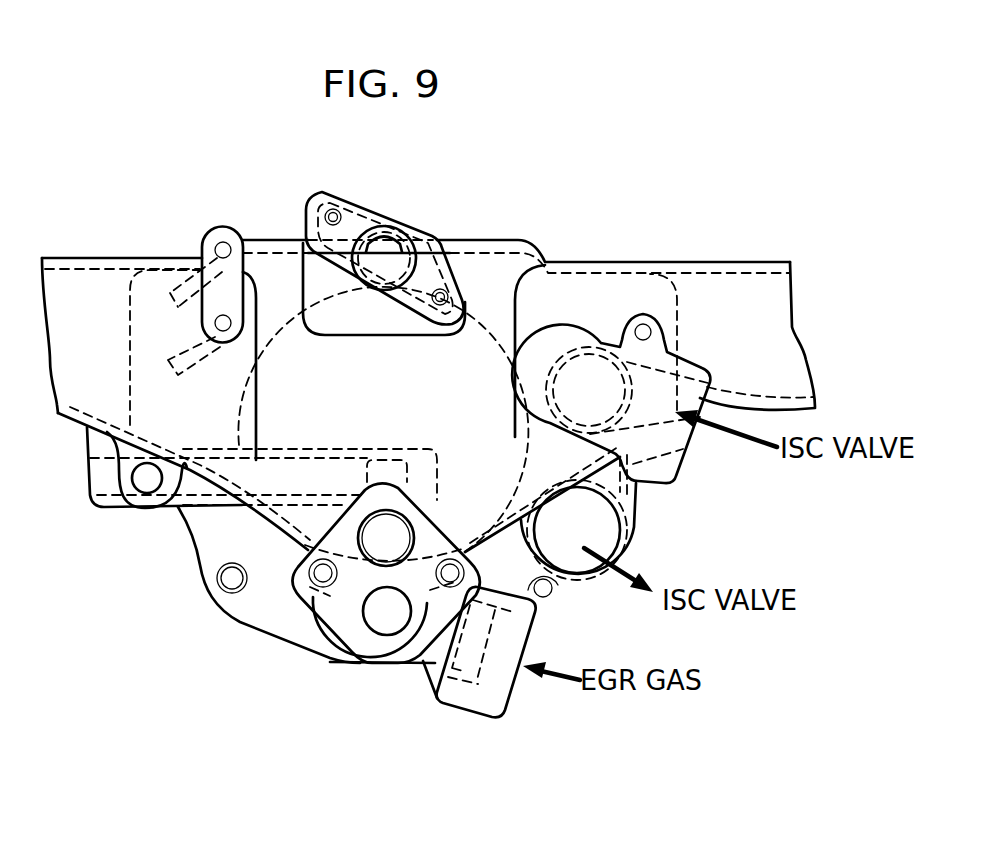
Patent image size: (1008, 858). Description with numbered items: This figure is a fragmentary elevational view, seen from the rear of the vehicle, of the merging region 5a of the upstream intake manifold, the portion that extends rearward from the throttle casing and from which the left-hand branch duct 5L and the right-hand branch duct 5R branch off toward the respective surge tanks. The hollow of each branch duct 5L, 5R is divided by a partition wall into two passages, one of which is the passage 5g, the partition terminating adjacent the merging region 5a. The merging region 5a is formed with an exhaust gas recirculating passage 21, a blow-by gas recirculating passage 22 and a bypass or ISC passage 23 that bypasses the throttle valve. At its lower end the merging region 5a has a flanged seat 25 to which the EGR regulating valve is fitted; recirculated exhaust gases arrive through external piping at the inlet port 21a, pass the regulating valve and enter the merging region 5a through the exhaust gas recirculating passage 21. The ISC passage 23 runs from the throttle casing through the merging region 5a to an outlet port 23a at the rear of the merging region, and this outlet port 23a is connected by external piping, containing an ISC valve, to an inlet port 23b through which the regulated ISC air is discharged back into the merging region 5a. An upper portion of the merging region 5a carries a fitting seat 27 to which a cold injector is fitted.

The right-hand branch duct 5R is at (113, 256).
The left-hand branch duct 5L is at (749, 259).
The passage 5g is at (85, 266).
The merging region 5a is at (522, 262).
The fitting seat 27 is at (363, 207).
The bypass passage (ISC passage) 23 is at (576, 355).
The outlet port 23a is at (597, 514).
The inlet port 23b is at (694, 446).
The blow-by gas recirculating passage 22 is at (147, 482).
The exhaust gas recirculating (EGR) passage 21 is at (400, 541).
The inlet port 21a is at (387, 458).
The flanged seat 25 is at (340, 617).